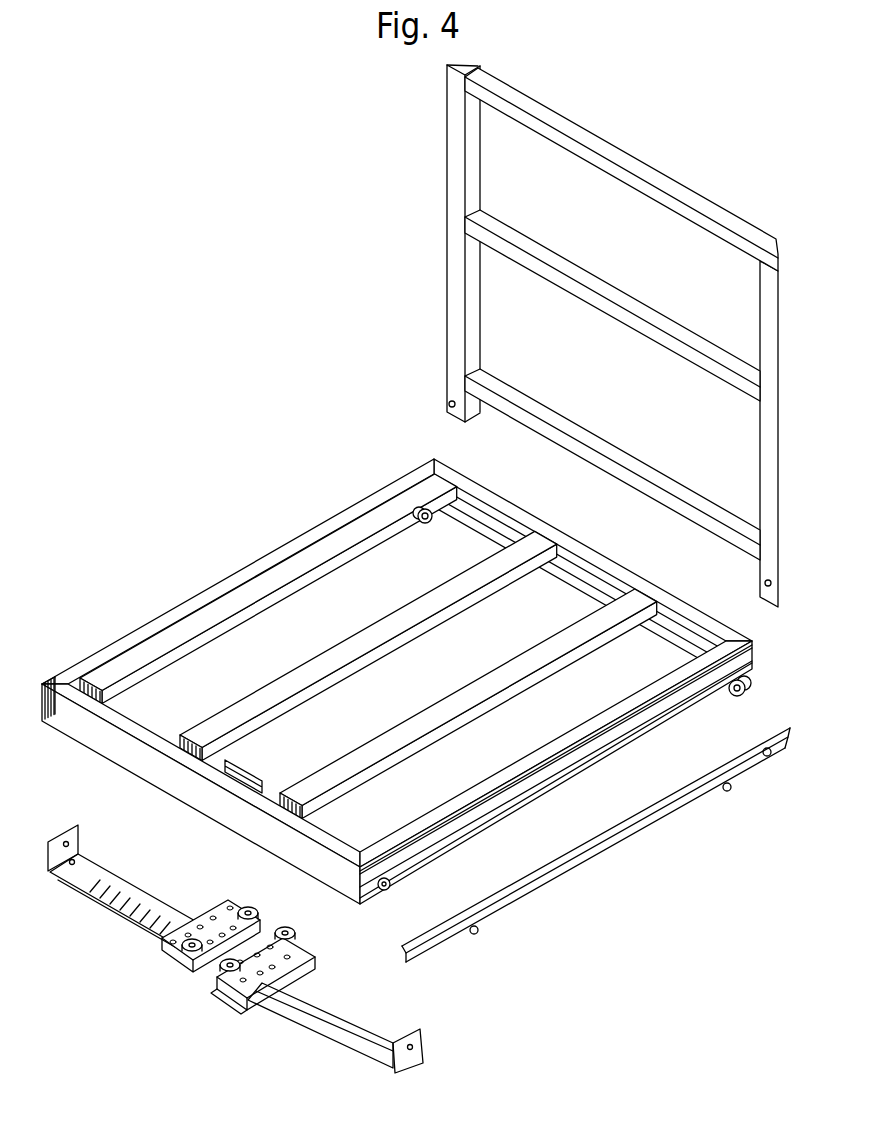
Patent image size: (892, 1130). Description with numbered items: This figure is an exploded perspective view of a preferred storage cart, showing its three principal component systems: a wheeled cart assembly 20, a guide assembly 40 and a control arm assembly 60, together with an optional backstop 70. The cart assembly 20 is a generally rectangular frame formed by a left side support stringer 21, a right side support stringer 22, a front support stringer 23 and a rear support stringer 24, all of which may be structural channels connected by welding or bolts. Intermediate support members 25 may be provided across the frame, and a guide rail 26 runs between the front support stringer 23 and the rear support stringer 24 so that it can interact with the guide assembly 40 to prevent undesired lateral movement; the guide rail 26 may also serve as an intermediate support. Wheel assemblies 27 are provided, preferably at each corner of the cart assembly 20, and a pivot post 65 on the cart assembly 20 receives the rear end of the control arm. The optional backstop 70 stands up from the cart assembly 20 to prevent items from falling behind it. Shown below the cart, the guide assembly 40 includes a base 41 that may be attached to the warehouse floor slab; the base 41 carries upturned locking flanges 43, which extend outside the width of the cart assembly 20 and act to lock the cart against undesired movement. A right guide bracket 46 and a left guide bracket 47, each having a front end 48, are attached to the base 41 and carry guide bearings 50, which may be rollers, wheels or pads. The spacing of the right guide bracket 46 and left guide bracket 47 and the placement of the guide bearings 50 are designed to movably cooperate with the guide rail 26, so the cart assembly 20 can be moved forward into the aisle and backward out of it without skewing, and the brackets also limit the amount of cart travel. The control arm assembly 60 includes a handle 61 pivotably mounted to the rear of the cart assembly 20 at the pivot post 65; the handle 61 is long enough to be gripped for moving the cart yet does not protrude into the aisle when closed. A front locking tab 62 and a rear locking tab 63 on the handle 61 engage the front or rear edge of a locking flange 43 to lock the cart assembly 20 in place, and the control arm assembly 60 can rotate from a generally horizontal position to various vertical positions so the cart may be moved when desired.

The wheeled cart assembly 20 is at (412, 648).
The left side support stringer 21 is at (375, 486).
The right side support stringer 22 is at (731, 646).
The front support stringer 23 is at (87, 727).
The rear support stringer 24 is at (455, 468).
The intermediate support member 25 is at (153, 725).
The guide rail 26 is at (192, 777).
The wheel assembly 27 is at (742, 693).
The pivot post 65 is at (746, 678).
The backstop 70 is at (768, 270).
The guide assembly 40 is at (256, 958).
The base 41 is at (352, 1035).
The locking flange 43 is at (80, 836).
The right guide bracket 46 is at (257, 998).
The left guide bracket 47 is at (165, 930).
The front end 48 is at (223, 987).
The guide bearing 50 is at (262, 910).
The control arm assembly 60 is at (596, 853).
The handle 61 is at (522, 898).
The front locking tab 62 is at (474, 934).
The rear locking tab 63 is at (725, 791).